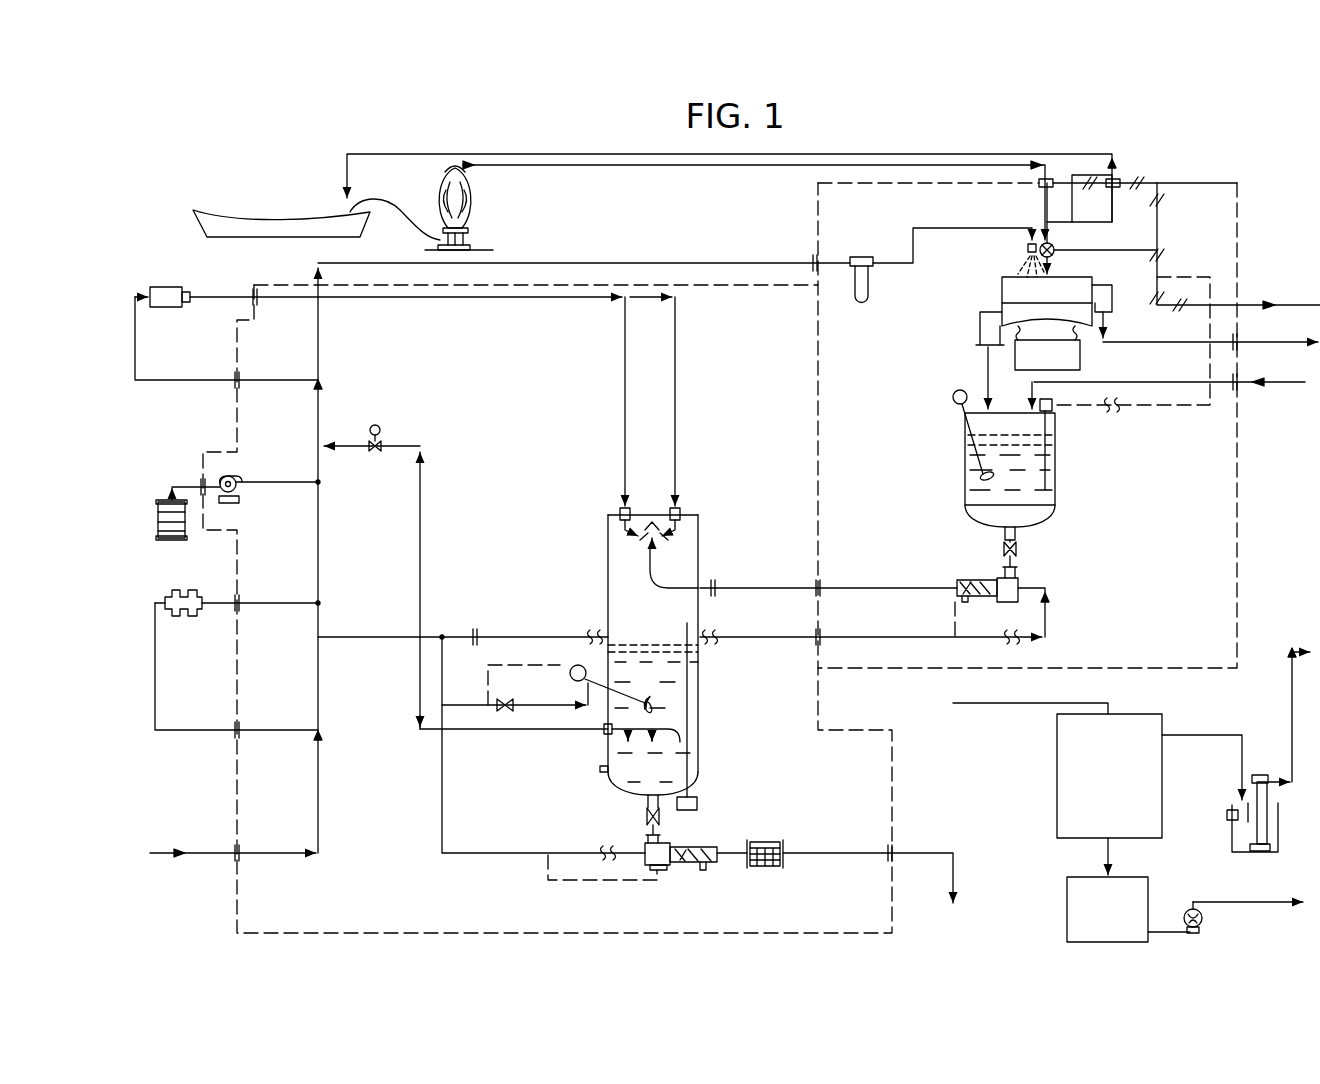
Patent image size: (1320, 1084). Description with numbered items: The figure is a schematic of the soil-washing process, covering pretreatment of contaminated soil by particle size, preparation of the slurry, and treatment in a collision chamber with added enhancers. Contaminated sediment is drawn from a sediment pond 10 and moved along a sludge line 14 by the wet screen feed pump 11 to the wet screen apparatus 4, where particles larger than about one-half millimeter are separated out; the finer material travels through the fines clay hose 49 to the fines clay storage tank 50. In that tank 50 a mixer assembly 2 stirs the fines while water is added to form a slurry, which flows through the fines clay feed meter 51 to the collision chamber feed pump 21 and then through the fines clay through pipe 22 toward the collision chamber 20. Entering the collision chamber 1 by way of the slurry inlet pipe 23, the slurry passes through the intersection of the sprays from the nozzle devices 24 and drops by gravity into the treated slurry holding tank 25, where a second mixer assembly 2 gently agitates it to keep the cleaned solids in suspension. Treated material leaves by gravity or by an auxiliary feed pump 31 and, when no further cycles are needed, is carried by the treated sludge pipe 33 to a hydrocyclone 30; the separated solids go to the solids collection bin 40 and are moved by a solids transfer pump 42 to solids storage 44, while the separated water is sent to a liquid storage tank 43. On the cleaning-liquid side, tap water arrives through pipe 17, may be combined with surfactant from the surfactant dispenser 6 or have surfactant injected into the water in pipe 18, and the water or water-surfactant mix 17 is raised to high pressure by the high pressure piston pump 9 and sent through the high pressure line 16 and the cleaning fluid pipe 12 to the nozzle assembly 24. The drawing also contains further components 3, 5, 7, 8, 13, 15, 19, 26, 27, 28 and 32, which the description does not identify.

The collision chamber 1 is at (668, 722).
The mixer assembly 2 is at (972, 450).
The filter 3 is at (868, 256).
The wet screen apparatus 4 is at (1022, 325).
The valve 5 is at (646, 845).
The surfactant dispenser 6 is at (170, 495).
The pump 7 is at (240, 490).
The heat exchanger 8 is at (176, 618).
The high pressure piston pump 9 is at (170, 287).
The sediment pond 10 is at (293, 212).
The wet screen feed pump 11 is at (478, 224).
The cleaning fluid pipe 12 is at (650, 262).
The line 13 is at (642, 158).
The sludge line 14 is at (733, 168).
The line 15 is at (422, 535).
The high pressure line 16 is at (446, 300).
The water pipe 17 is at (375, 637).
The water pipe 18 is at (320, 548).
The valve 19 is at (382, 426).
The collision chamber 20 is at (685, 562).
The collision chamber feed pump 21 is at (1020, 580).
The fines clay through pipe 22 is at (904, 586).
The slurry inlet pipe 23 is at (702, 592).
The nozzle assembly 24 is at (632, 538).
The treated slurry holding tank 25 is at (668, 762).
The line 26 is at (714, 640).
The sensor 27 is at (700, 804).
The distributor 28 is at (685, 742).
The hydrocyclone 30 is at (1127, 781).
The auxiliary feed pump 31 is at (660, 872).
The flow meter 32 is at (765, 868).
The treated sludge pipe 33 is at (955, 800).
The solids collection bin 40 is at (1127, 924).
The solids transfer pump 42 is at (1200, 925).
The liquid storage tank 43 is at (1290, 715).
The solids storage 44 is at (1280, 905).
The fines clay hose 49 is at (985, 372).
The fines clay storage tank 50 is at (1030, 452).
The fines clay feed meter 51 is at (1020, 549).